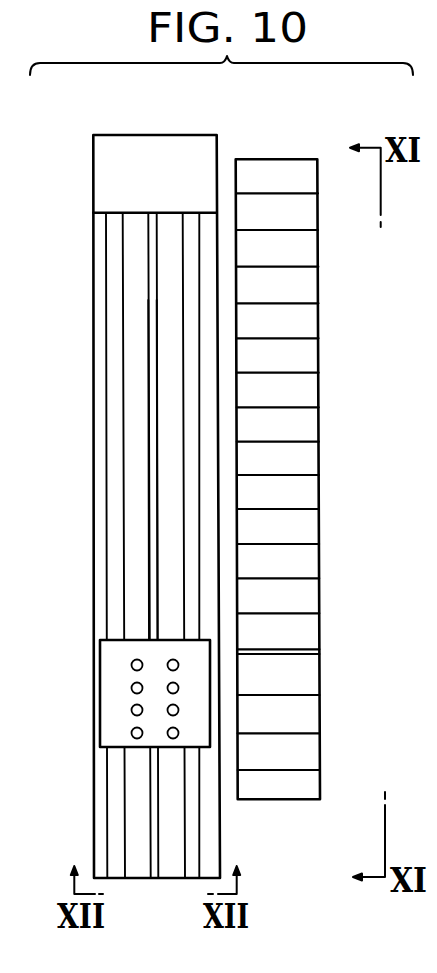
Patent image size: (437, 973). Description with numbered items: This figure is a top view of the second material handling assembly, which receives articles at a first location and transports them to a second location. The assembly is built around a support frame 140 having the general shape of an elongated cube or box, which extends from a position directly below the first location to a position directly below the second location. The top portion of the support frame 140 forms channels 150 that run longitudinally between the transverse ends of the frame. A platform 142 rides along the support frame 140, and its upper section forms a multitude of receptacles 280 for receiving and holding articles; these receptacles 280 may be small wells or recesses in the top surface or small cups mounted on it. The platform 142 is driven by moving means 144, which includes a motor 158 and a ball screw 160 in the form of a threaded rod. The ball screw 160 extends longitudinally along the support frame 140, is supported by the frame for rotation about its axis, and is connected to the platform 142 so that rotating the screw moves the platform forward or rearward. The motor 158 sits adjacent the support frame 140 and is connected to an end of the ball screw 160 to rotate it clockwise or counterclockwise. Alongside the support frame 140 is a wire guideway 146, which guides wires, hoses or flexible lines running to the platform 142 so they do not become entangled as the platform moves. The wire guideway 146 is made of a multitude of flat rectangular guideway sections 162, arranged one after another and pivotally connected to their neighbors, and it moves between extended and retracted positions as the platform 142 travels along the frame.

The moving means 144 is at (168, 117).
The motor 158 is at (110, 170).
The ball screw 160 is at (148, 256).
The support frame 140 is at (93, 405).
The channels 150 is at (188, 512).
The platform 142 is at (112, 652).
The receptacles 280 is at (132, 710).
The guideway sections 162 is at (315, 490).
The wire guideway 146 is at (338, 764).